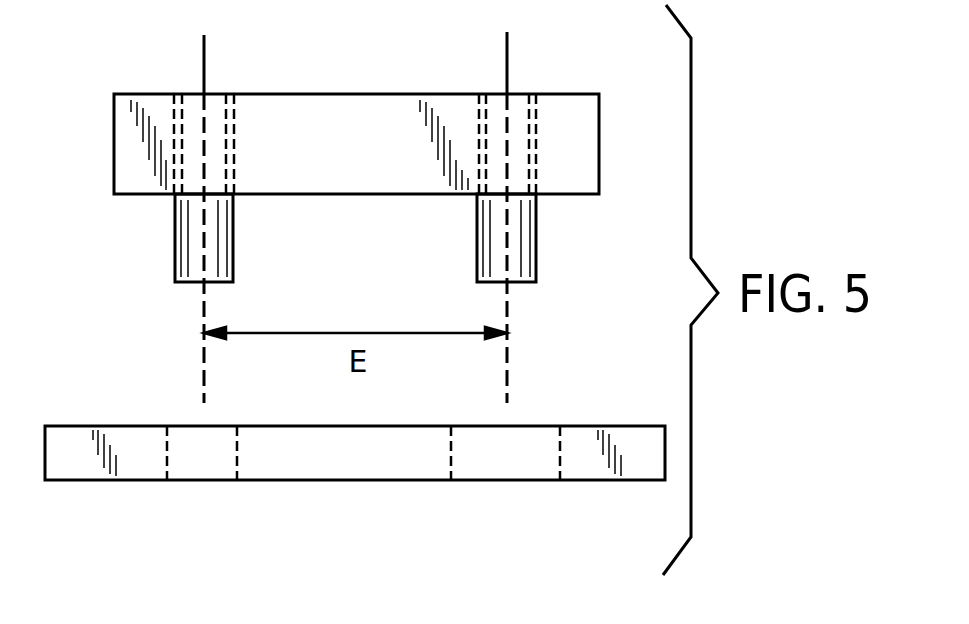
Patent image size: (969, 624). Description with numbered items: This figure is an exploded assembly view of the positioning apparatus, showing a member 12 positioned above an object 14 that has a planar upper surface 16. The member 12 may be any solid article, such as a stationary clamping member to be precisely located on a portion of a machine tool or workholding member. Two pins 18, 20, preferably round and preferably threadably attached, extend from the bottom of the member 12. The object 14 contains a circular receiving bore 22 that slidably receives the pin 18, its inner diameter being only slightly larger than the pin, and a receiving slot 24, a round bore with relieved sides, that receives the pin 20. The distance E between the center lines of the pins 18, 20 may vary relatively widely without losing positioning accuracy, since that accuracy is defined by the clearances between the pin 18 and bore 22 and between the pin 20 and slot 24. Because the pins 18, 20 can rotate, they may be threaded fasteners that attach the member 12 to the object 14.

The member 12 is at (320, 163).
The object 14 is at (317, 467).
The planar upper surface 16 is at (352, 413).
The pin 18 is at (180, 260).
The pin 20 is at (532, 261).
The circular receiving bore 22 is at (167, 443).
The receiving slot 24 is at (560, 447).